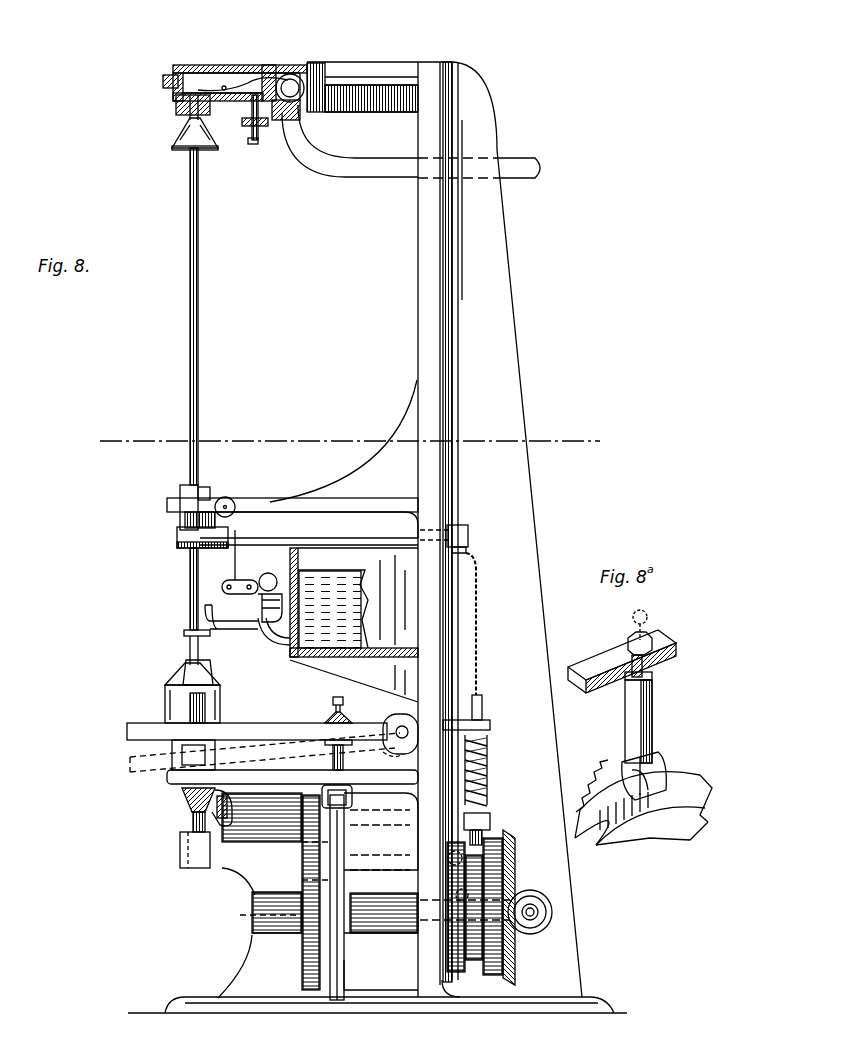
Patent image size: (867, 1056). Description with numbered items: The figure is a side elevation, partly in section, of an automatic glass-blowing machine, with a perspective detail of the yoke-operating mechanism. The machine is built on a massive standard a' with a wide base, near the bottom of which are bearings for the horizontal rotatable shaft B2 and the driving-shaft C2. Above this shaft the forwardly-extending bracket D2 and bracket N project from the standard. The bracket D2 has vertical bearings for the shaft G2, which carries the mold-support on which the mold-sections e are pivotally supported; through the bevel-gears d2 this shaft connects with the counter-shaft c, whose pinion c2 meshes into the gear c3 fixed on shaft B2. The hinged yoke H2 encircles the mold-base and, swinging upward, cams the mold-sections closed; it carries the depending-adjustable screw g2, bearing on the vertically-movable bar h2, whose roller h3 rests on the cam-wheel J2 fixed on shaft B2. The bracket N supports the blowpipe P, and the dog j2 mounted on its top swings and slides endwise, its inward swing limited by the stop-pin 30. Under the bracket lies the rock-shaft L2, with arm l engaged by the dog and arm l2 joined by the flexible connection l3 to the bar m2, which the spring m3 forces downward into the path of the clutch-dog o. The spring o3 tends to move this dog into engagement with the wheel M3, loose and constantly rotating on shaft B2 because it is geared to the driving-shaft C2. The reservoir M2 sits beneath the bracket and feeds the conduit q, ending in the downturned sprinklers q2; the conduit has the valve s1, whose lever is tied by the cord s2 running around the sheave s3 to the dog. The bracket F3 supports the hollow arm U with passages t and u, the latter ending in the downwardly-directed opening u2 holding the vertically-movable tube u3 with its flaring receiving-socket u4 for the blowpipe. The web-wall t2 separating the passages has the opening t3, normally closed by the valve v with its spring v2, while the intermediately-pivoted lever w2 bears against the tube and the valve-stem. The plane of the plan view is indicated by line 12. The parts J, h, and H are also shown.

In FIG. 8, the chamber or passage u is at (164, 67).
In FIG. 8, the intermediately-pivoted lever w2 is at (202, 86).
In FIG. 8, the hollow arm U is at (232, 66).
In FIG. 8, the opening t3 is at (266, 75).
In FIG. 8, the web-wall t2 is at (293, 74).
In FIG. 8, the bracket F3 is at (362, 73).
In FIG. 8, the downwardly-directed opening u2 is at (176, 105).
In FIG. 8, the vertically-movable tube u3 is at (178, 140).
In FIG. 8, the valve v is at (252, 122).
In FIG. 8, the downwardly-flaring receiving-socket u4 is at (182, 150).
In FIG. 8, the spring v2 is at (250, 140).
In FIG. 8, the chamber or passage t is at (283, 120).
In FIG. 8, the blowpipe P is at (199, 395).
In FIG. 8, the section line 12 is at (348, 440).
In FIG. 8, the dog j2 is at (182, 490).
In FIG. 8, the stop-pin 30 is at (208, 490).
In FIG. 8, the sheave s3 is at (230, 498).
In FIG. 8, the bracket N is at (275, 505).
In FIG. 8, the arm l is at (180, 530).
In FIG. 8, the rock-shaft L2 is at (292, 521).
In FIG. 8, the standard a' is at (460, 529).
In FIG. 8, the arm l2 is at (470, 545).
In FIG. 8, the cord s2 is at (233, 562).
In FIG. 8, the valve s1 is at (268, 578).
In FIG. 8, the reservoir M2 is at (354, 625).
In FIG. 8, the downturned sprinklers q2 is at (184, 634).
In FIG. 8, the conduit q is at (238, 630).
In FIG. 8, the flexible connection l3 is at (478, 665).
In FIG. 8, the mold-sections e is at (168, 706).
In FIG. 8, the cylinder J is at (222, 710).
In FIG. 8, the hinged yoke H2 is at (290, 730).
In FIG. 8A, the hinged yoke H2 is at (600, 660).
In FIG. 8, the depending-adjustable screw g2 is at (345, 708).
In FIG. 8A, the depending-adjustable screw g2 is at (645, 663).
In FIG. 8, the bar m2 is at (484, 705).
In FIG. 8, the bracket D2 is at (265, 757).
In FIG. 8, the pivot h is at (355, 748).
In FIG. 8, the spring m3 is at (488, 790).
In FIG. 8, the gear H is at (168, 782).
In FIG. 8, the shaft G2 is at (192, 812).
In FIG. 8, the roller h3 is at (350, 800).
In FIG. 8A, the roller h3 is at (645, 796).
In FIG. 8, the cam-wheel J2 is at (345, 858).
In FIG. 8A, the cam-wheel J2 is at (655, 838).
In FIG. 8, the bevel-gears d2 is at (180, 850).
In FIG. 8, the counter-shaft c is at (248, 842).
In FIG. 8, the pinion c2 is at (300, 842).
In FIG. 8, the spring o3 is at (445, 850).
In FIG. 8, the clutch-dog o is at (455, 883).
In FIG. 8, the wheel M3 is at (498, 878).
In FIG. 8, the horizontal rotatable shaft B2 is at (250, 912).
In FIG. 8, the driving-shaft C2 is at (535, 910).
In FIG. 8, the gear c3 is at (305, 975).
In FIG. 8A, the vertically-movable bar h2 is at (645, 725).